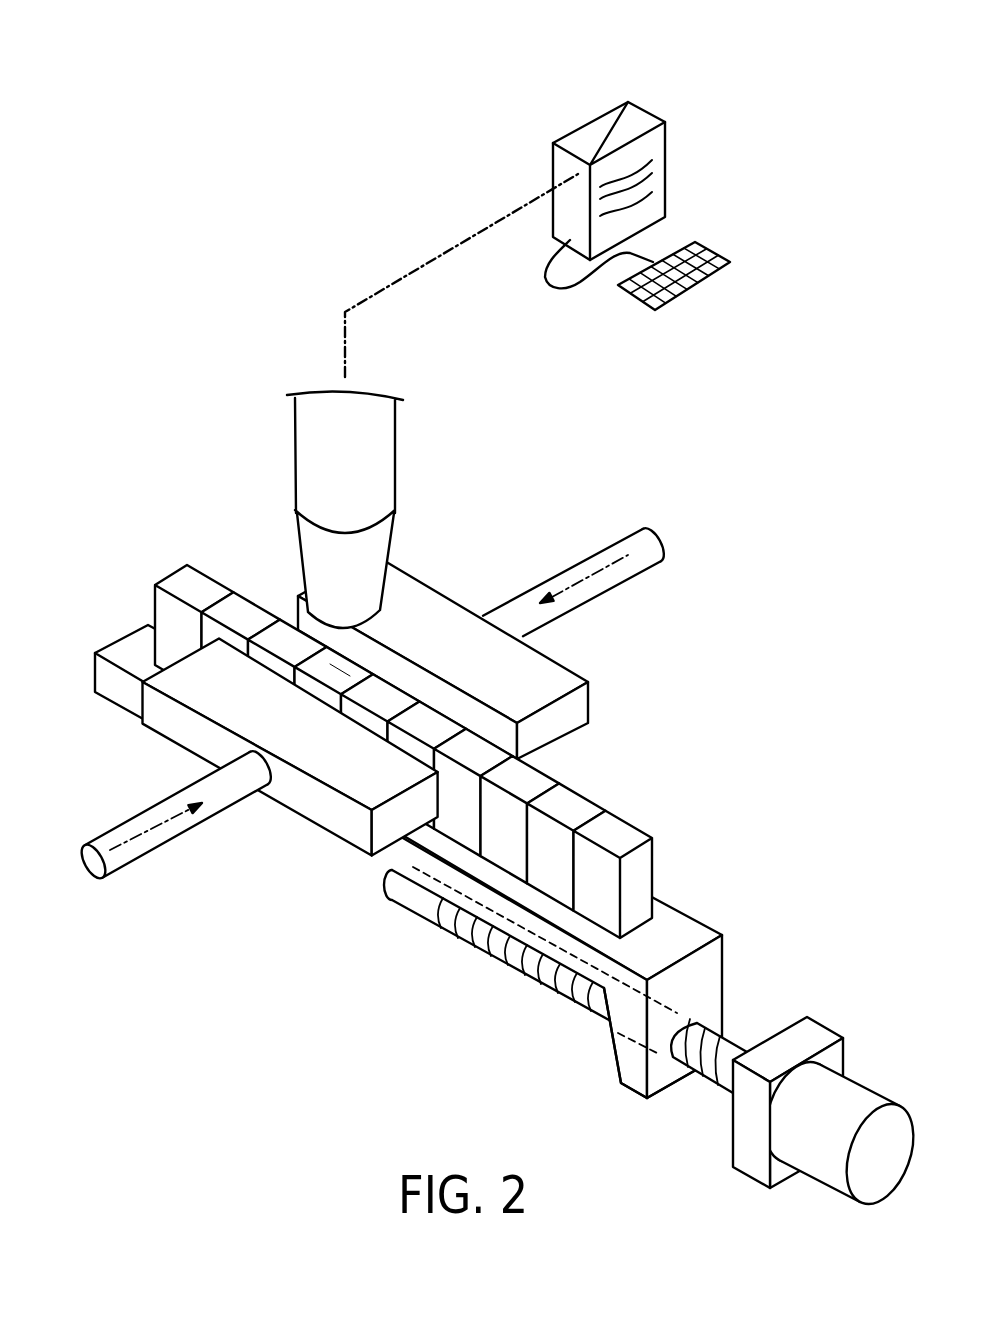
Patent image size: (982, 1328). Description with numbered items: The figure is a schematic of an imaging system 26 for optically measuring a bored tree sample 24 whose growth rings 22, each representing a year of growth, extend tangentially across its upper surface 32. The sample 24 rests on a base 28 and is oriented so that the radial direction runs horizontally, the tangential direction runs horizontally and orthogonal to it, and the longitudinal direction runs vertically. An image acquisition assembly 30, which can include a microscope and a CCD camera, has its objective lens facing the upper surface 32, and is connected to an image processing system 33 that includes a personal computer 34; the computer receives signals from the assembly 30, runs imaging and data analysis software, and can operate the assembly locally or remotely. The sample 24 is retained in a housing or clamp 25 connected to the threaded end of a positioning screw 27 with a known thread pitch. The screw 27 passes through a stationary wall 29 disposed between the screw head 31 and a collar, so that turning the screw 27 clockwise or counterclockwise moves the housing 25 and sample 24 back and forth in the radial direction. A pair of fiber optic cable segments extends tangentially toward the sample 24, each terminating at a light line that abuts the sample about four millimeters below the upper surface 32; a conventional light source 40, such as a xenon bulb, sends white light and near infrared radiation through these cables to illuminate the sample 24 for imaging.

The growth rings 22 is at (283, 633).
The sample 24 is at (657, 855).
The housing or clamp 25 is at (627, 1057).
The imaging system 26 is at (403, 237).
The screw 27 is at (555, 993).
The base 28 is at (672, 947).
The stationary wall 29 is at (820, 1033).
The image acquisition assembly 30 is at (397, 455).
The screw head 31 is at (660, 1077).
The upper surface 32 is at (347, 677).
The image processing system 33 is at (733, 1130).
The personal computer 34 is at (668, 162).
The light source 40 is at (117, 852).